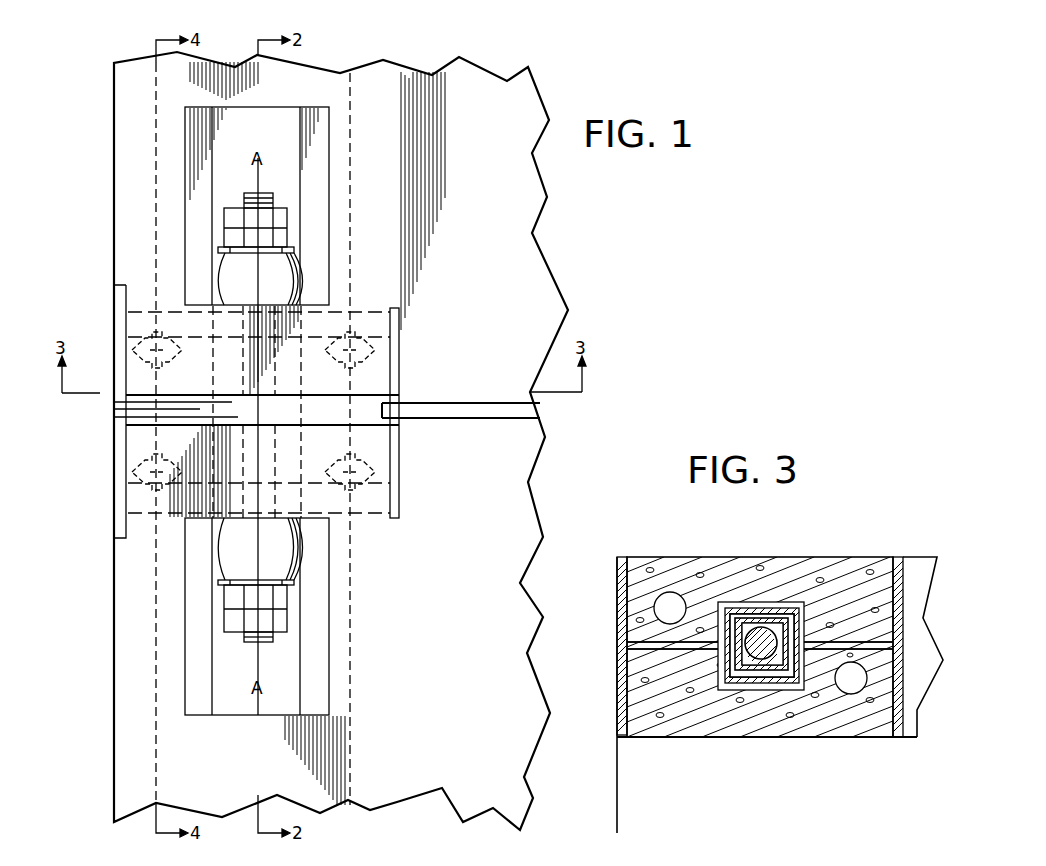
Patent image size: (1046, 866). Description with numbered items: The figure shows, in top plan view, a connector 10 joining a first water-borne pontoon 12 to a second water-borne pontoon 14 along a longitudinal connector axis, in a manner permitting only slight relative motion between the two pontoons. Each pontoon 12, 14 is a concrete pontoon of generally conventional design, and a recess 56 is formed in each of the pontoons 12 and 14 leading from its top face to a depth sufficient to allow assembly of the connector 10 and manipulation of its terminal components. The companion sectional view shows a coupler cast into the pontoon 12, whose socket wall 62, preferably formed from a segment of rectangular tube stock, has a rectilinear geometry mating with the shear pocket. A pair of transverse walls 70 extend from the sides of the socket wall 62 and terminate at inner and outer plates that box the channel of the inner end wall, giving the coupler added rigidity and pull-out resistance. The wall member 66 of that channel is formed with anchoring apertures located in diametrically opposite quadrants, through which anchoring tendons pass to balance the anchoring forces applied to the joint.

In FIG. 1, the connector 10 is at (378, 295).
In FIG. 1, the first water-borne pontoon 12 is at (478, 173).
In FIG. 3, the first water-borne pontoon 12 is at (713, 774).
In FIG. 1, the second water-borne pontoon 14 is at (468, 523).
In FIG. 3, the recess 56 is at (826, 578).
In FIG. 3, the socket wall 62 is at (745, 600).
In FIG. 3, the wall member 66 is at (627, 728).
In FIG. 3, the transverse walls 70 is at (840, 643).